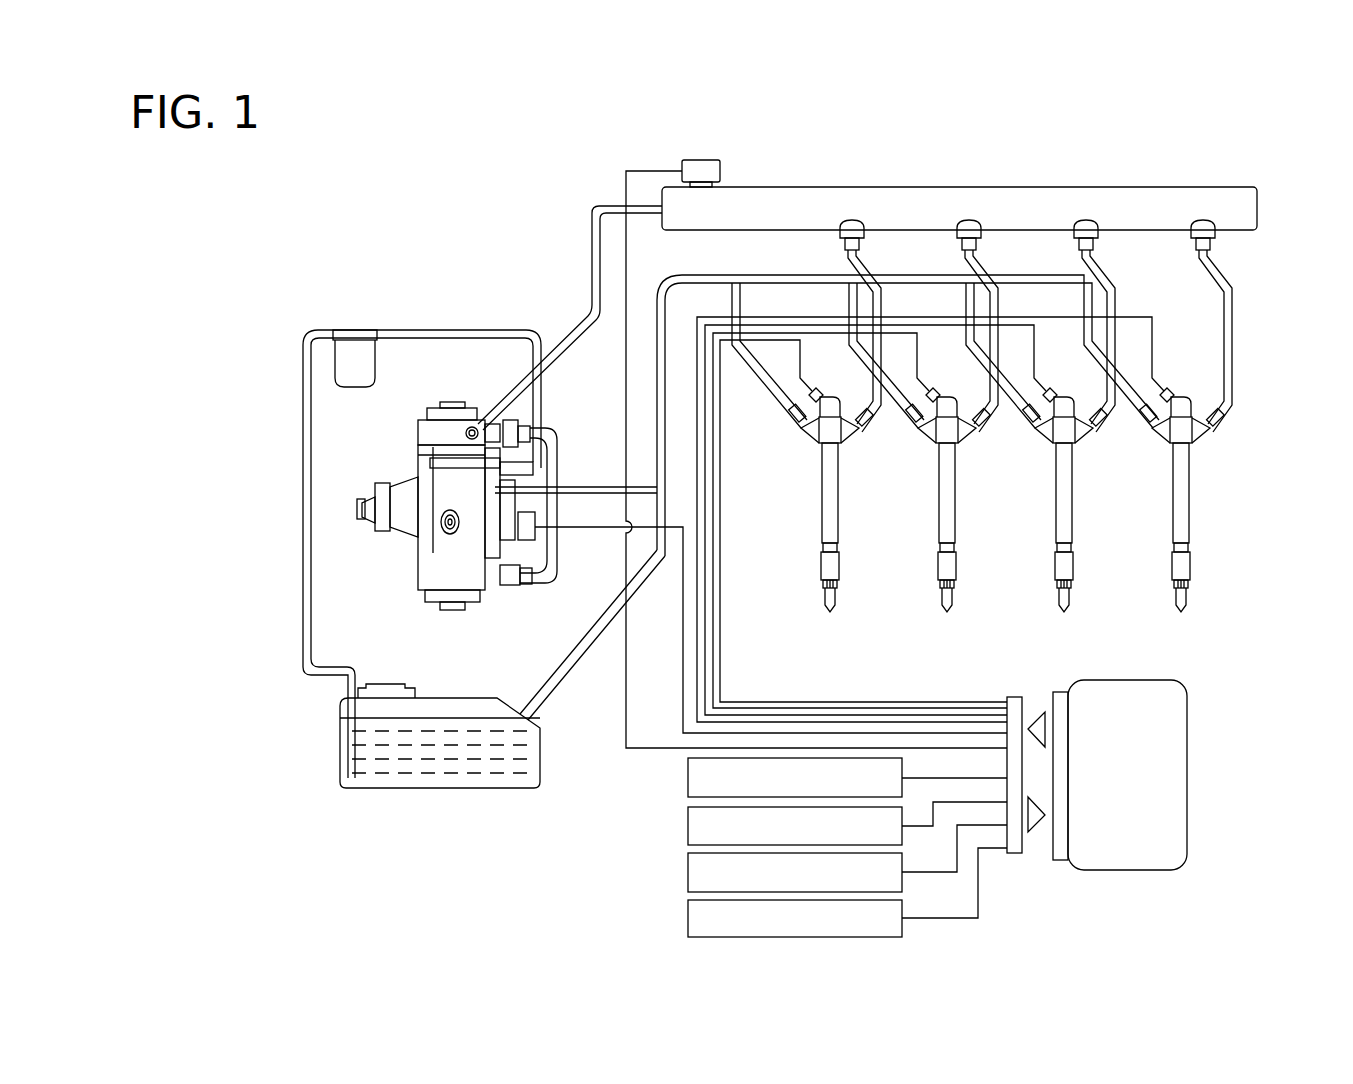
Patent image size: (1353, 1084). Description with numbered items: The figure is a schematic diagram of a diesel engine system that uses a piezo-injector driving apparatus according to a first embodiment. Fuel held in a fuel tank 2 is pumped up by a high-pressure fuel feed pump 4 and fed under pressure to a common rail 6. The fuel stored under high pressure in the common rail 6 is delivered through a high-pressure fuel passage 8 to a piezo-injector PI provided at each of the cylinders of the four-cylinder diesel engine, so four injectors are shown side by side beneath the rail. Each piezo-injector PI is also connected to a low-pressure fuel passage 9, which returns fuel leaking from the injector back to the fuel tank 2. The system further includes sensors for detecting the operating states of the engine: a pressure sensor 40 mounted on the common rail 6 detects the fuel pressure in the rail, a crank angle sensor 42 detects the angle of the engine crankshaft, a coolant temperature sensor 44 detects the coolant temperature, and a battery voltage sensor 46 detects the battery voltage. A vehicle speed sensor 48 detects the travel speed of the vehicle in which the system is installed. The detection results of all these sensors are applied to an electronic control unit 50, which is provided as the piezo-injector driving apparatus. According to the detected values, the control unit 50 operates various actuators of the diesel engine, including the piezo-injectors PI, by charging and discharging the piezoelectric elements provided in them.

The fuel tank 2 is at (452, 698).
The high-pressure fuel feed pump 4 is at (470, 425).
The common rail 6 is at (995, 186).
The high-pressure fuel passage 8 is at (880, 293).
The low-pressure fuel passage 9 is at (708, 276).
The pressure sensor 40 is at (706, 160).
The crank angle sensor 42 is at (688, 778).
The coolant temperature sensor 44 is at (688, 826).
The battery voltage sensor 46 is at (688, 872).
The vehicle speed sensor 48 is at (688, 918).
The electronic control unit 50 is at (1155, 680).
The piezo-injector PI is at (840, 505).